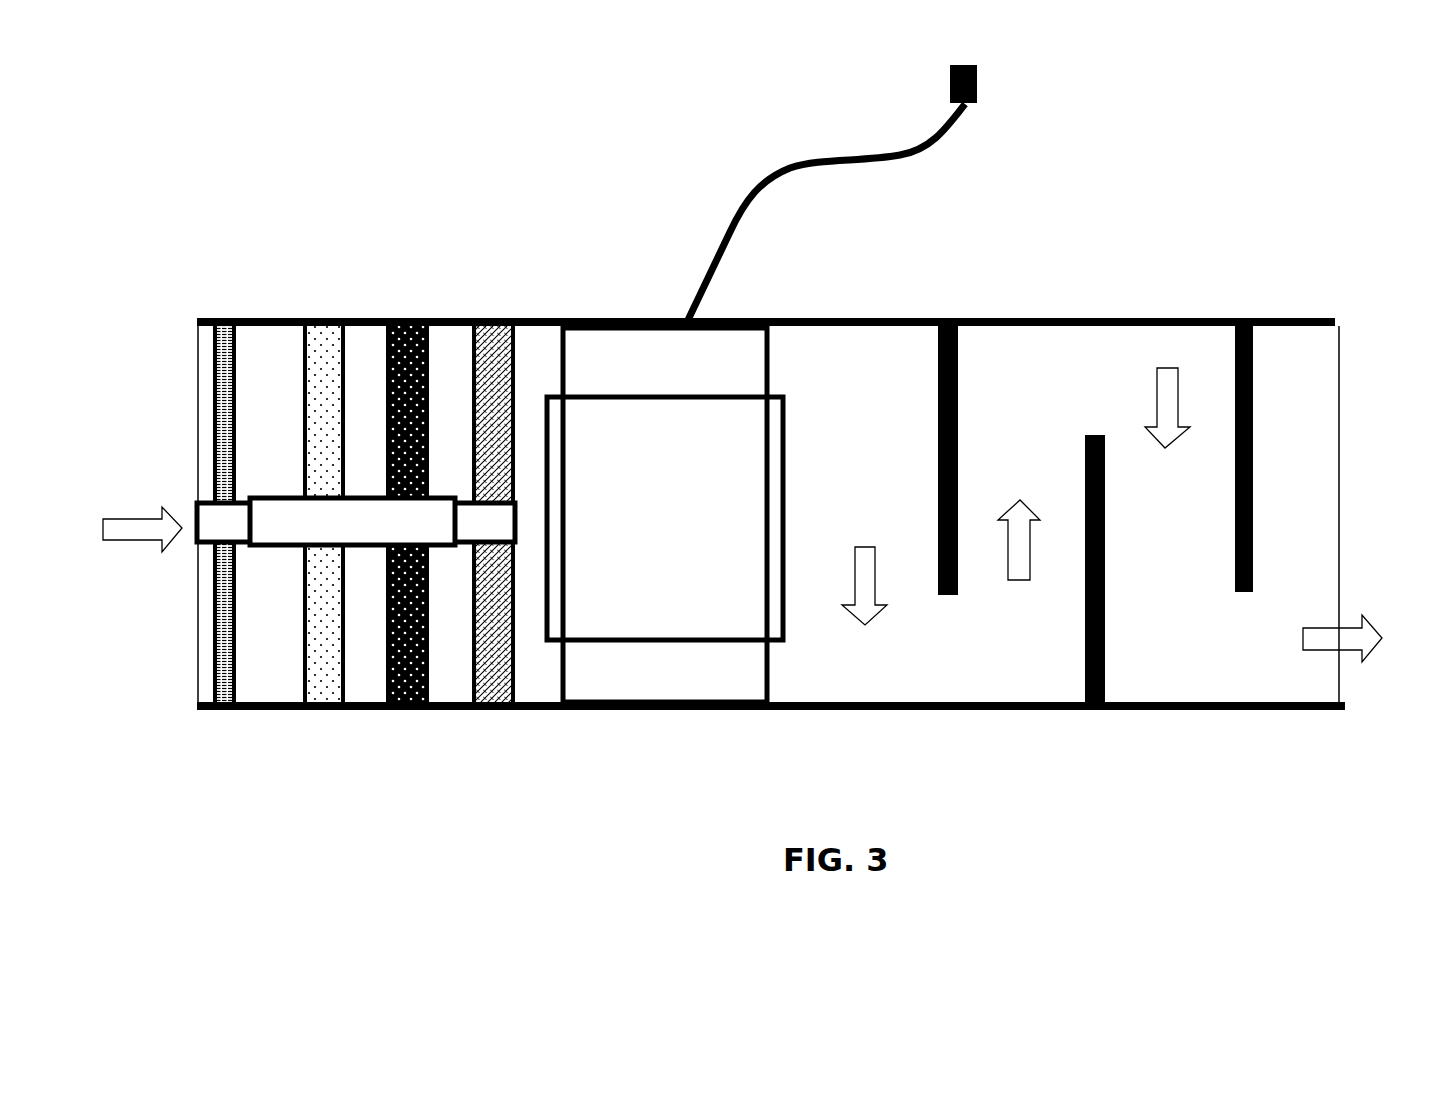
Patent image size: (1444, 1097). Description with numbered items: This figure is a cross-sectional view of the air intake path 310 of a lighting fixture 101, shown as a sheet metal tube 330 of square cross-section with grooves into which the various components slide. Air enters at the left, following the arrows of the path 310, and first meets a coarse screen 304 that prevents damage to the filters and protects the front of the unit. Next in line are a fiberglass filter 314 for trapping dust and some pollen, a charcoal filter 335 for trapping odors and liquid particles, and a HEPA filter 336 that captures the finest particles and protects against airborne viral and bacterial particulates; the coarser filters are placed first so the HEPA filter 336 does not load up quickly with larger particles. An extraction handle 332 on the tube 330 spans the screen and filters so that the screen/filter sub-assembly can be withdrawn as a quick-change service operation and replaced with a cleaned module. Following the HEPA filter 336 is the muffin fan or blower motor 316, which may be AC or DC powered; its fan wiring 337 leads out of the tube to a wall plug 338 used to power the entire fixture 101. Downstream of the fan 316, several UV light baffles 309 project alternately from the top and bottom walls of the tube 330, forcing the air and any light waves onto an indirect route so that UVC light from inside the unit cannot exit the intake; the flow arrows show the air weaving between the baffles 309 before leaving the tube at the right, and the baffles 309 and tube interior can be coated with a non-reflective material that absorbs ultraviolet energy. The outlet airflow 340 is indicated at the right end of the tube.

The lighting fixture 101 is at (748, 83).
The coarse screen 304 is at (227, 317).
The fiberglass filter 314 is at (325, 317).
The charcoal filter 335 is at (407, 317).
The HEPA filter 336 is at (490, 317).
The extraction handle 332 is at (353, 522).
The muffin fan (blower motor) 316 is at (643, 712).
The fan wiring 337 is at (733, 237).
The wall plug 338 is at (973, 107).
The UV light baffles 309 is at (952, 317).
The sheet metal tube 330 is at (968, 712).
The air intake path 310 is at (113, 537).
The outlet airflow 340 is at (1323, 652).